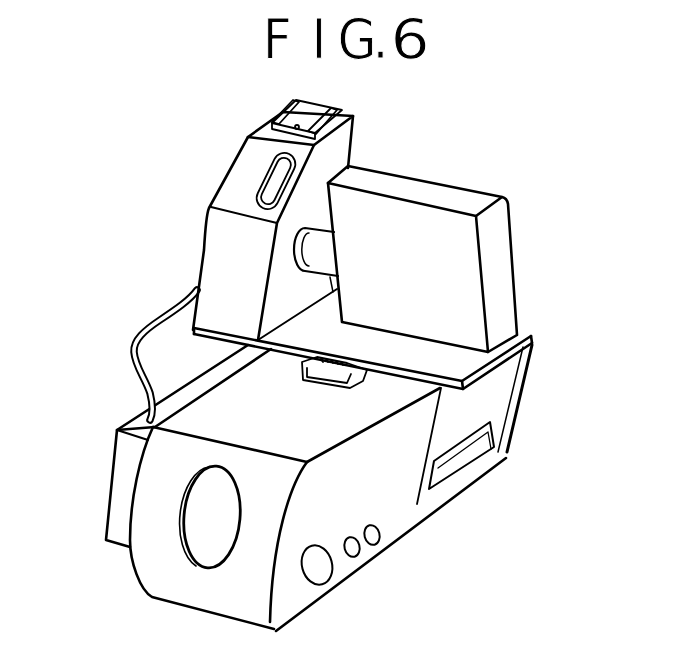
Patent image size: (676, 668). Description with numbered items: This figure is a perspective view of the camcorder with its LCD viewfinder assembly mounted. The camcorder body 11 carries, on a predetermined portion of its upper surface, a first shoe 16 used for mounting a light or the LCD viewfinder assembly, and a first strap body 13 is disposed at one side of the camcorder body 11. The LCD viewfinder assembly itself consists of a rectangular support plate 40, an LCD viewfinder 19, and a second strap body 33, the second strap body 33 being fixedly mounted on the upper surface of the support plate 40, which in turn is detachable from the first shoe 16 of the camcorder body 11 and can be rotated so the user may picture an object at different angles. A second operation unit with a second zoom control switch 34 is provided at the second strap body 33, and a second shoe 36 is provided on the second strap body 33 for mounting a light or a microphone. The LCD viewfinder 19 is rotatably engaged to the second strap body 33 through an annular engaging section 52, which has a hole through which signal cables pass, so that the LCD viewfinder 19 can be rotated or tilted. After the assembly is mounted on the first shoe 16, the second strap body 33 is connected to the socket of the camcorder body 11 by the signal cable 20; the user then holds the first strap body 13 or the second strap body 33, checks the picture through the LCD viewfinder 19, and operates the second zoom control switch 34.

The camcorder body 11 is at (410, 445).
The first strap body 13 is at (122, 473).
The first shoe 16 is at (338, 388).
The LCD viewfinder 19 is at (468, 252).
The signal cable 20 is at (134, 340).
The second strap body 33 is at (245, 150).
The second zoom control switch 34 is at (268, 181).
The second shoe 36 is at (335, 110).
The support plate 40 is at (463, 361).
The annular engaging section 52 is at (322, 250).